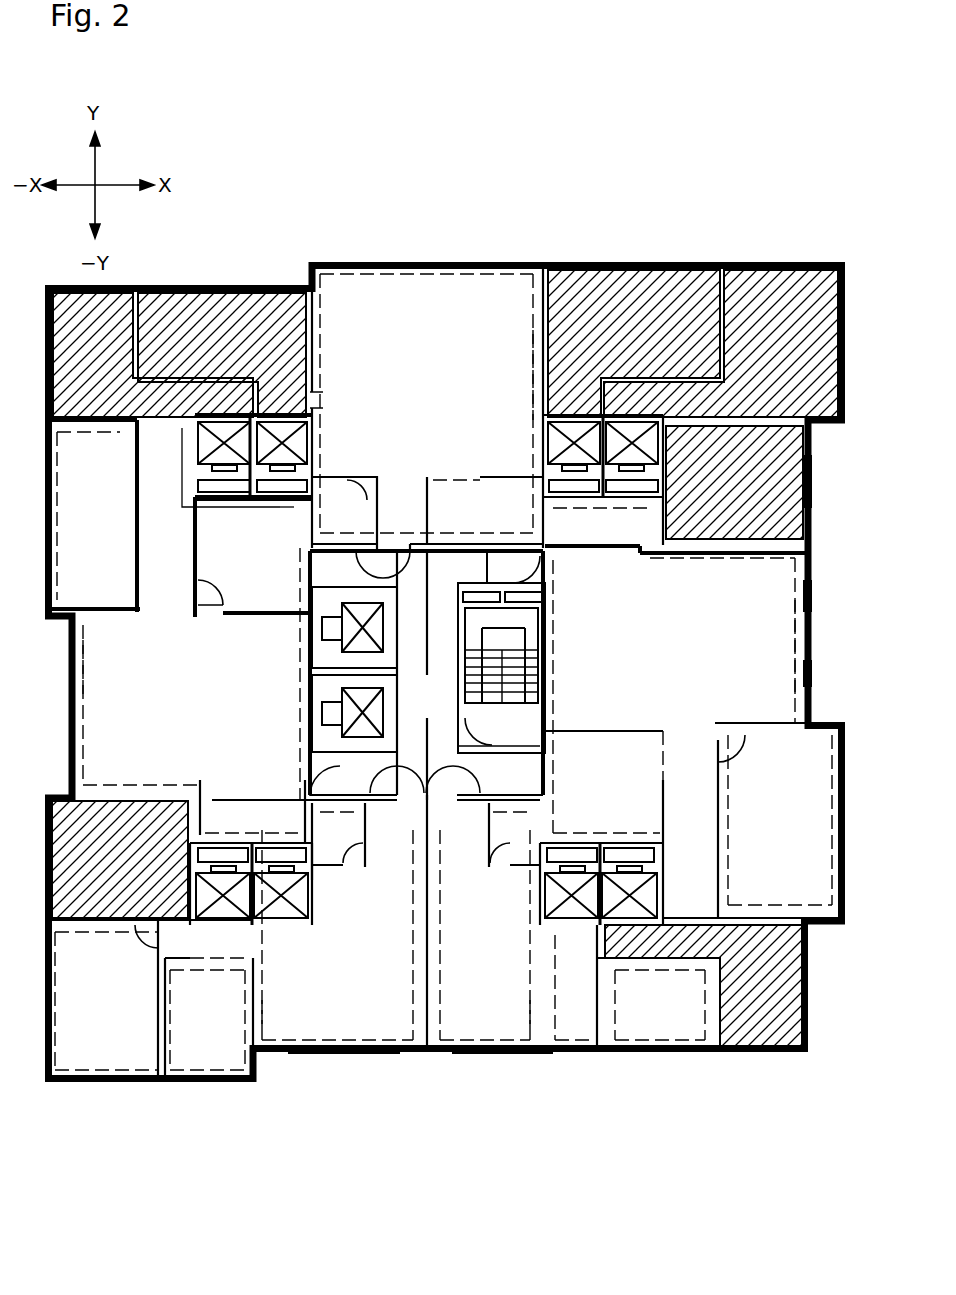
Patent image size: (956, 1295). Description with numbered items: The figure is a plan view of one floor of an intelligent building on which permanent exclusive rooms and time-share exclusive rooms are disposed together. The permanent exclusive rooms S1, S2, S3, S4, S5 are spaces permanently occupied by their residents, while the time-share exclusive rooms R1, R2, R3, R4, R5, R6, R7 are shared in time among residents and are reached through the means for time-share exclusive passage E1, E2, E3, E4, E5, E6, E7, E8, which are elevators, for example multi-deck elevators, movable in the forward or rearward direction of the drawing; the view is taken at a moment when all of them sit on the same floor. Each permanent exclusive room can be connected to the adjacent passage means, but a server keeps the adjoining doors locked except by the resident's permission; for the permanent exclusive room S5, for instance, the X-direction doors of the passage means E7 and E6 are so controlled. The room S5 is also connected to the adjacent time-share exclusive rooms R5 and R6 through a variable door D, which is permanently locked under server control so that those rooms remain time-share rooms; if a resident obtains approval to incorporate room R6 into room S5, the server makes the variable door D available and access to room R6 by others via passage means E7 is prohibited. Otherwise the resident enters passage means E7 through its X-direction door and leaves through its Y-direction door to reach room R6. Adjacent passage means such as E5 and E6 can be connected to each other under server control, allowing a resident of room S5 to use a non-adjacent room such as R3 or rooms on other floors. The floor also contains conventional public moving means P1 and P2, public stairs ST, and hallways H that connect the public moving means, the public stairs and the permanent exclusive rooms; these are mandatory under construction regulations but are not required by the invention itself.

The means for time-share exclusive passage E1 is at (224, 900).
The means for time-share exclusive passage E2 is at (283, 900).
The means for time-share exclusive passage E3 is at (572, 900).
The means for time-share exclusive passage E4 is at (630, 900).
The means for time-share exclusive passage E5 is at (630, 445).
The means for time-share exclusive passage E6 is at (574, 445).
The means for time-share exclusive passage E7 is at (280, 445).
The means for time-share exclusive passage E8 is at (226, 445).
The time-share exclusive room R1 is at (136, 876).
The time-share exclusive room R2 is at (772, 996).
The time-share exclusive room R3 is at (746, 490).
The time-share exclusive room R4 is at (794, 352).
The time-share exclusive room R5 is at (632, 352).
The time-share exclusive room R6 is at (198, 364).
The time-share exclusive room R7 is at (108, 364).
The public moving means P1 is at (338, 628).
The public moving means P2 is at (338, 713).
The permanent exclusive room S1 is at (127, 785).
The permanent exclusive room S2 is at (337, 1040).
The permanent exclusive room S3 is at (512, 1040).
The permanent exclusive room S4 is at (795, 714).
The permanent exclusive room S5 is at (530, 427).
The variable door D is at (323, 398).
The hallway H is at (445, 708).
The public stairs ST is at (501, 652).